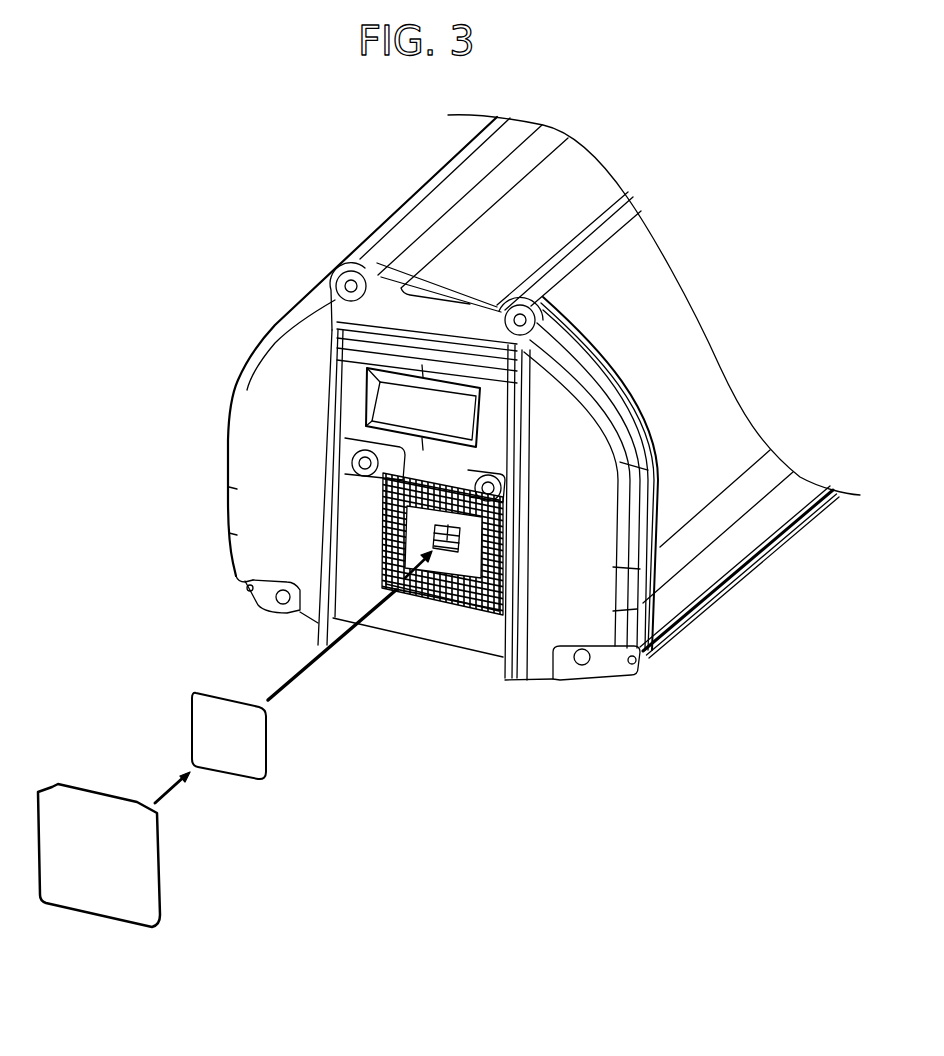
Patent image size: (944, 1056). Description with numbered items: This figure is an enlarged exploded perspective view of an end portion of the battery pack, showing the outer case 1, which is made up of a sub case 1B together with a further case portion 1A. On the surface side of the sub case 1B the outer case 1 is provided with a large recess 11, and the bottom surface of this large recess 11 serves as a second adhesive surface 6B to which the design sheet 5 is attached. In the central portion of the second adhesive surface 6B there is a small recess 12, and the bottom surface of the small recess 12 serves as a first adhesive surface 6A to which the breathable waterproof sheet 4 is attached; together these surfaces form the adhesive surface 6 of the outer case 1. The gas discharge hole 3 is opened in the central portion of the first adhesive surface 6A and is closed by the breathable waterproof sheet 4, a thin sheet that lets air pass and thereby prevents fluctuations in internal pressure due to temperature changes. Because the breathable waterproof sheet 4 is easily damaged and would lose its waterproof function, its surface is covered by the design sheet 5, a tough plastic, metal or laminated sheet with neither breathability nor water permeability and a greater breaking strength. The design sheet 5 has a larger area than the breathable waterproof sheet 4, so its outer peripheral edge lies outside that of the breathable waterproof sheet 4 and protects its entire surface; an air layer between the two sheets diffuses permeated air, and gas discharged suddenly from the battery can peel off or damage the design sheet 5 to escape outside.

The outer case 1 is at (544, 490).
The housing body 1A is at (707, 457).
The sub case 1B is at (570, 560).
The gas discharge hole 3 is at (410, 594).
The breathable waterproof sheet 4 is at (228, 750).
The design sheet 5 is at (95, 887).
The adhesive surface 6 is at (294, 521).
The first adhesive surface 6A is at (408, 547).
The second adhesive surface 6B is at (366, 524).
The large recess 11 is at (464, 604).
The small recess 12 is at (455, 553).